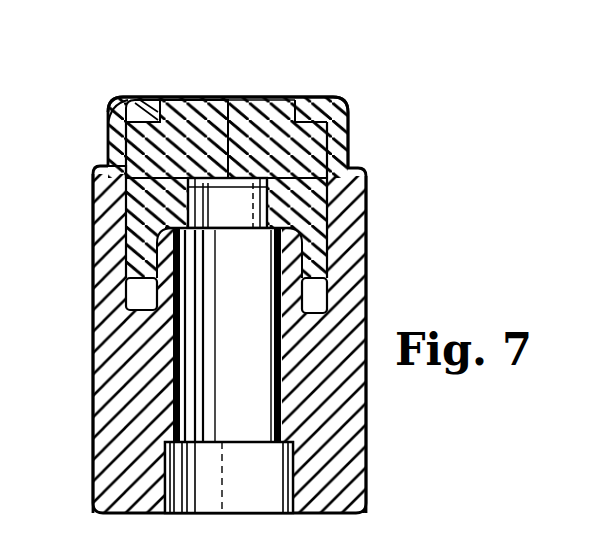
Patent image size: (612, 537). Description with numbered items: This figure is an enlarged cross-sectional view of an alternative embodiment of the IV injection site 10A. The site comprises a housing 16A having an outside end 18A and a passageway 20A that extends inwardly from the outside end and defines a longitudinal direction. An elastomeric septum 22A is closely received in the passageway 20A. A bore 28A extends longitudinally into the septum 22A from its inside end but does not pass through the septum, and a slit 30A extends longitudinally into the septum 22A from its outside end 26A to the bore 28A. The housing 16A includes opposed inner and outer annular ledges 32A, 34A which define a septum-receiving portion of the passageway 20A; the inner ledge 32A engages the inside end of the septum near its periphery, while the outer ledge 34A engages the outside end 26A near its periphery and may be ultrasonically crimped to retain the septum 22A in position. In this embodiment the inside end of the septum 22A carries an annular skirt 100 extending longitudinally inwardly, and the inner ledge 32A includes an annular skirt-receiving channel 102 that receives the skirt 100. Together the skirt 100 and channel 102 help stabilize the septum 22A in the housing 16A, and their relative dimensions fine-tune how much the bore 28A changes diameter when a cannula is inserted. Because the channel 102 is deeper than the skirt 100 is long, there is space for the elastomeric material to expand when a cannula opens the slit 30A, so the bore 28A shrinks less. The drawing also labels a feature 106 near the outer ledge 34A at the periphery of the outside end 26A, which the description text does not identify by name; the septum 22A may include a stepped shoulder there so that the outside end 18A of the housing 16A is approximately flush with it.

The IV injection site 10A is at (385, 135).
The housing 16A is at (342, 436).
The outside end of the housing 18A is at (310, 97).
The passageway 20A is at (328, 203).
The elastomeric septum 22A is at (282, 94).
The outside end of the septum 26A is at (202, 97).
The bore 28A is at (190, 183).
The slit 30A is at (229, 142).
The inner ledge 32A is at (188, 228).
The outer ledge 34A is at (144, 99).
The annular skirt 100 is at (140, 258).
The skirt-receiving channel 102 is at (133, 303).
The bead 106 is at (108, 108).